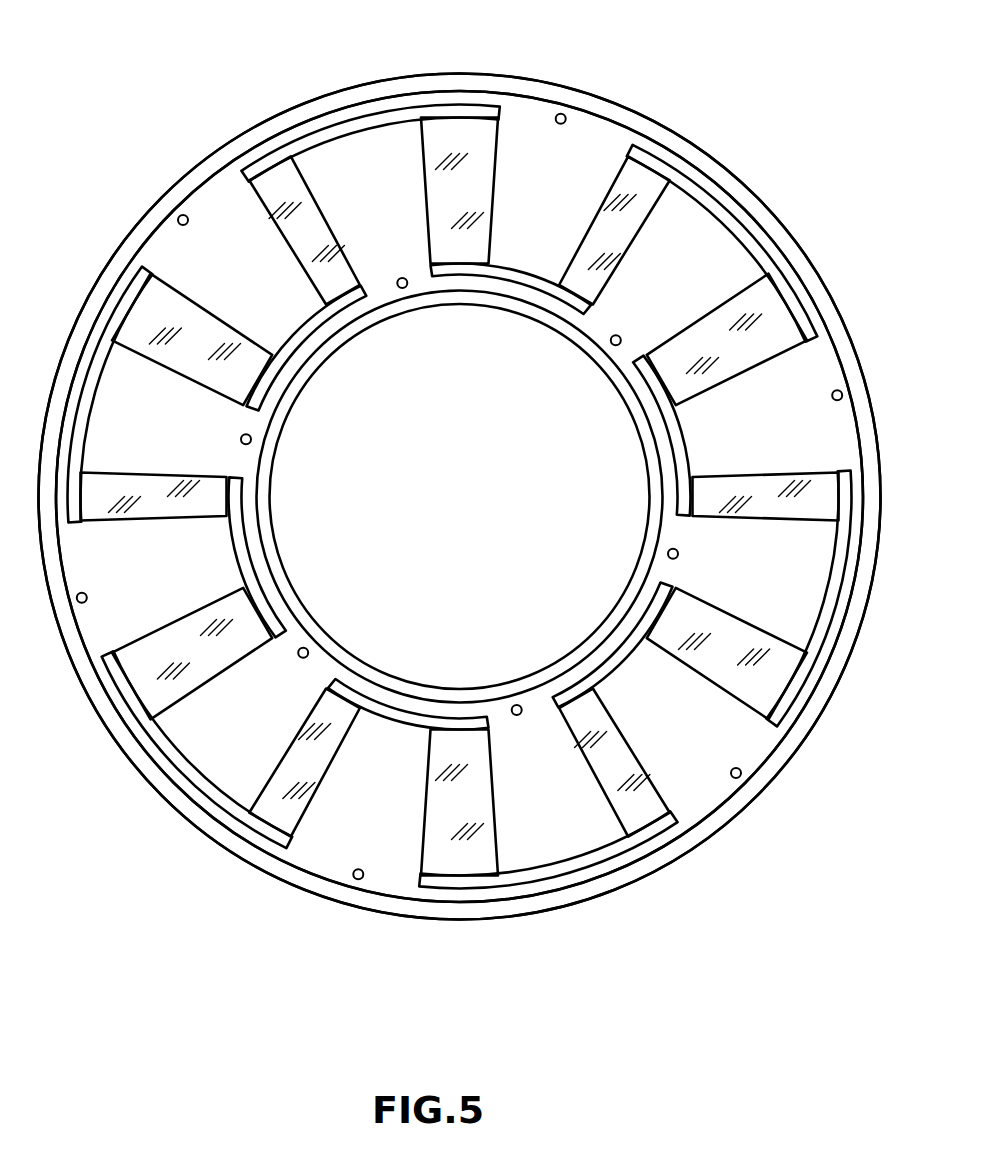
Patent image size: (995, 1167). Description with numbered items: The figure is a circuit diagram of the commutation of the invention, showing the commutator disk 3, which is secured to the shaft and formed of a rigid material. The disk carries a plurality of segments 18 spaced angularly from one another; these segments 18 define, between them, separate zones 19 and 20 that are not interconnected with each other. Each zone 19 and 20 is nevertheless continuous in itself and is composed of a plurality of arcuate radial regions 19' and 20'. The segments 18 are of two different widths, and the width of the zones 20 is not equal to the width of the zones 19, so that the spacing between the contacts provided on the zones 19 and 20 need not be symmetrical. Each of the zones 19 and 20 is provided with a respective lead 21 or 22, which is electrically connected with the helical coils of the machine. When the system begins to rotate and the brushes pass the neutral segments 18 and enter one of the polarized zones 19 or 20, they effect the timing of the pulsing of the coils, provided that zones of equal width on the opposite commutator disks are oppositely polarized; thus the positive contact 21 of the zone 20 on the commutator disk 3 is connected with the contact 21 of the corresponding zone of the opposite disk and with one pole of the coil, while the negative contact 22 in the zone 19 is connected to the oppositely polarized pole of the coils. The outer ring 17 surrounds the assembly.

The commutator disk 3 is at (140, 836).
The outer ring 17 is at (607, 82).
The segments 18 is at (283, 195).
The zone 19 is at (433, 497).
The arcuate radial regions 19' is at (460, 496).
The zone 20 is at (459, 496).
The arcuate radial regions 20' is at (487, 497).
The lead 21 is at (356, 880).
The lead 22 is at (302, 647).